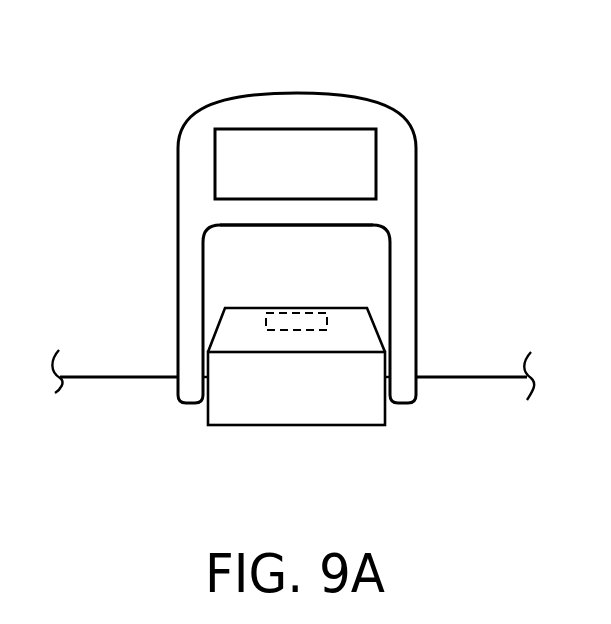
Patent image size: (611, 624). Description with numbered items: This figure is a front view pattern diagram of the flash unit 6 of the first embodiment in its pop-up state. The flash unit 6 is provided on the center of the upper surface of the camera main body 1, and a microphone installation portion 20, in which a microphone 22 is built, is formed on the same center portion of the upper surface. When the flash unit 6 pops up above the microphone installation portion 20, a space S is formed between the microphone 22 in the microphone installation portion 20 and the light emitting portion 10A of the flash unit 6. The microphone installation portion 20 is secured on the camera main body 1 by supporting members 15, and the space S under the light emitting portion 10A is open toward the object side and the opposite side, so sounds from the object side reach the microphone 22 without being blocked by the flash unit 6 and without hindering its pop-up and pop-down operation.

The flash unit 6 is at (143, 108).
The light emitting portion 10A is at (340, 159).
The space S is at (342, 268).
The microphone installation portion 20 is at (210, 316).
The microphone 22 is at (285, 323).
The camera main body 1 is at (443, 393).
The supporting members 15 is at (203, 387).